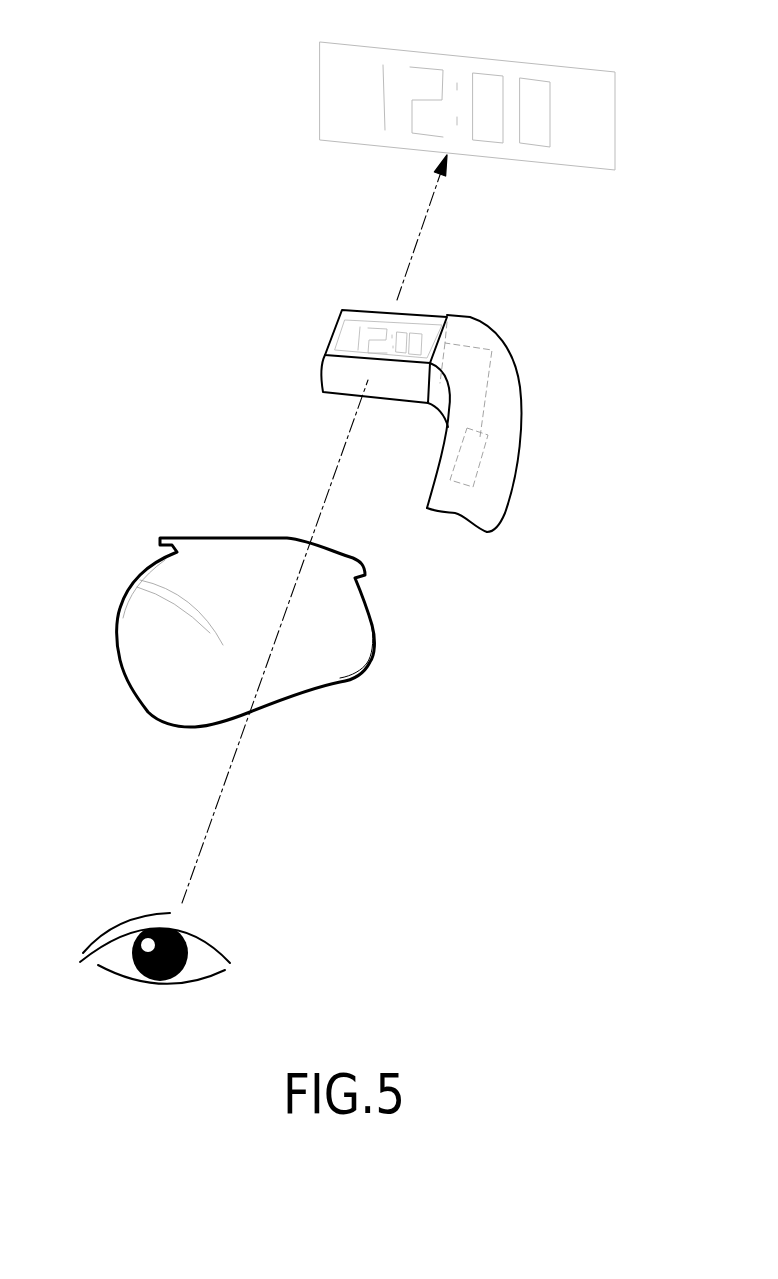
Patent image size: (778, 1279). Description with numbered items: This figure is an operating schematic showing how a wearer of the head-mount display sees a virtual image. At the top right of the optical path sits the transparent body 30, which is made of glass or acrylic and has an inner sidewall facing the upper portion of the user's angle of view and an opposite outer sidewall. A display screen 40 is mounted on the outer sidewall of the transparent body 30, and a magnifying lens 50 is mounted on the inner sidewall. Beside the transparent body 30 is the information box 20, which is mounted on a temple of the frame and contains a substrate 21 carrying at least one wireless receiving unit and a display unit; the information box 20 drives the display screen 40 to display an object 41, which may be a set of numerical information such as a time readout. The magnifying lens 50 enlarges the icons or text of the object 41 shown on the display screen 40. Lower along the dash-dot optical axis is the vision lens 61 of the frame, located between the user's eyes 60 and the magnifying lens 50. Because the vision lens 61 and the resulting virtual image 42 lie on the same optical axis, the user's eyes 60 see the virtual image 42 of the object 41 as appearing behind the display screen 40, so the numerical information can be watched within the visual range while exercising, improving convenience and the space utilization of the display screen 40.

The virtual image 42 is at (583, 83).
The display screen 40 is at (408, 320).
The object 41 is at (347, 330).
The transparent body 30 is at (356, 352).
The magnifying lens 50 is at (340, 383).
The information box 20 is at (522, 375).
The substrate 21 is at (472, 467).
The vision lens 61 is at (157, 670).
The user's eyes 60 is at (110, 973).